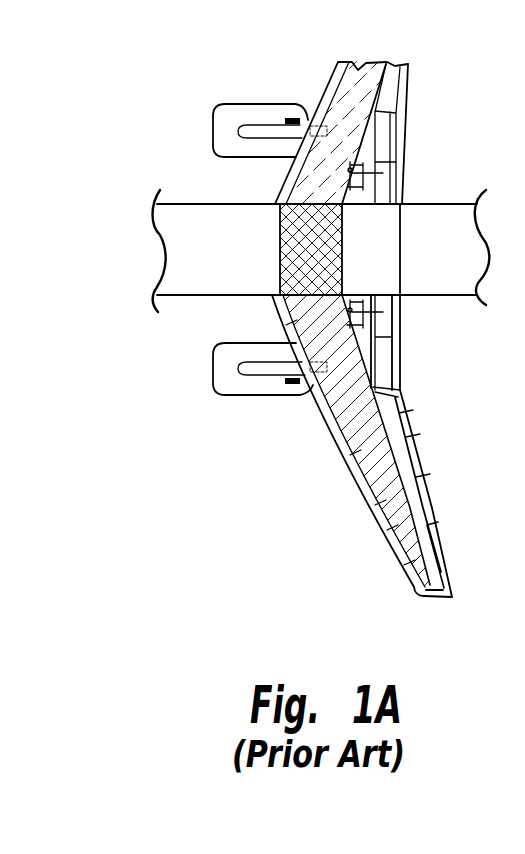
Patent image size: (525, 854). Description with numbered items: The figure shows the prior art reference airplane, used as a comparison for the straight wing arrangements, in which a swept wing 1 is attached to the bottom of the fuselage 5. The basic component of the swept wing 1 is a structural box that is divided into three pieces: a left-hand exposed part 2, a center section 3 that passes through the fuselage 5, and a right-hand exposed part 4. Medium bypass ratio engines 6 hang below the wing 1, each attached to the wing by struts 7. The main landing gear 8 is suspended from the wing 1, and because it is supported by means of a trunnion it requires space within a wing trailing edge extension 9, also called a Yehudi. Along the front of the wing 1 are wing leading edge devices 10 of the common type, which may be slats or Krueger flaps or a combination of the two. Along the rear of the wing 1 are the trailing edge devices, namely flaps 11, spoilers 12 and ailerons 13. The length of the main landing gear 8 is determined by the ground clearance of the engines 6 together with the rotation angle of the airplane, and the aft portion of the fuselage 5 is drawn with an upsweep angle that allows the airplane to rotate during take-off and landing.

The swept wing 1 is at (414, 597).
The left-hand exposed part 2 is at (352, 463).
The center section 3 is at (327, 240).
The right-hand exposed part 4 is at (355, 88).
The fuselage 5 is at (203, 278).
The medium bypass ratio engines 6 is at (236, 390).
The struts 7 is at (270, 372).
The main landing gear 8 is at (376, 319).
The wing trailing edge extension 9 is at (365, 150).
The wing leading edge devices 10 is at (370, 510).
The flaps 11 is at (400, 352).
The spoilers 12 is at (398, 415).
The ailerons 13 is at (447, 555).